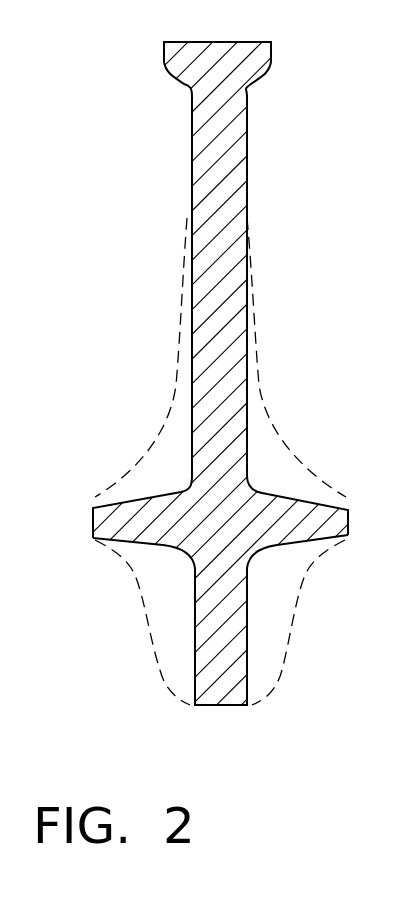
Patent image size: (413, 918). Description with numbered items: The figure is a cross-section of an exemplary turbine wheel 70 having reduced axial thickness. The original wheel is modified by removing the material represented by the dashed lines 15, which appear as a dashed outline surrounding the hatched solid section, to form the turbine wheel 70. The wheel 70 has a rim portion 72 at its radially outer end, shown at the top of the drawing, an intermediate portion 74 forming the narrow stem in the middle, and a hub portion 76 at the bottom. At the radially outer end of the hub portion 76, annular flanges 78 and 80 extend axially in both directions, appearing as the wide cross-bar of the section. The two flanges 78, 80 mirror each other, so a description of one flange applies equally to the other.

The turbine wheel 70 is at (142, 99).
The rim portion 72 is at (262, 54).
The intermediate portion 74 is at (228, 237).
The hub portion 76 is at (238, 667).
The annular flange 78 is at (320, 511).
The annular flange 80 is at (100, 523).
The dashed lines 15 is at (170, 403).